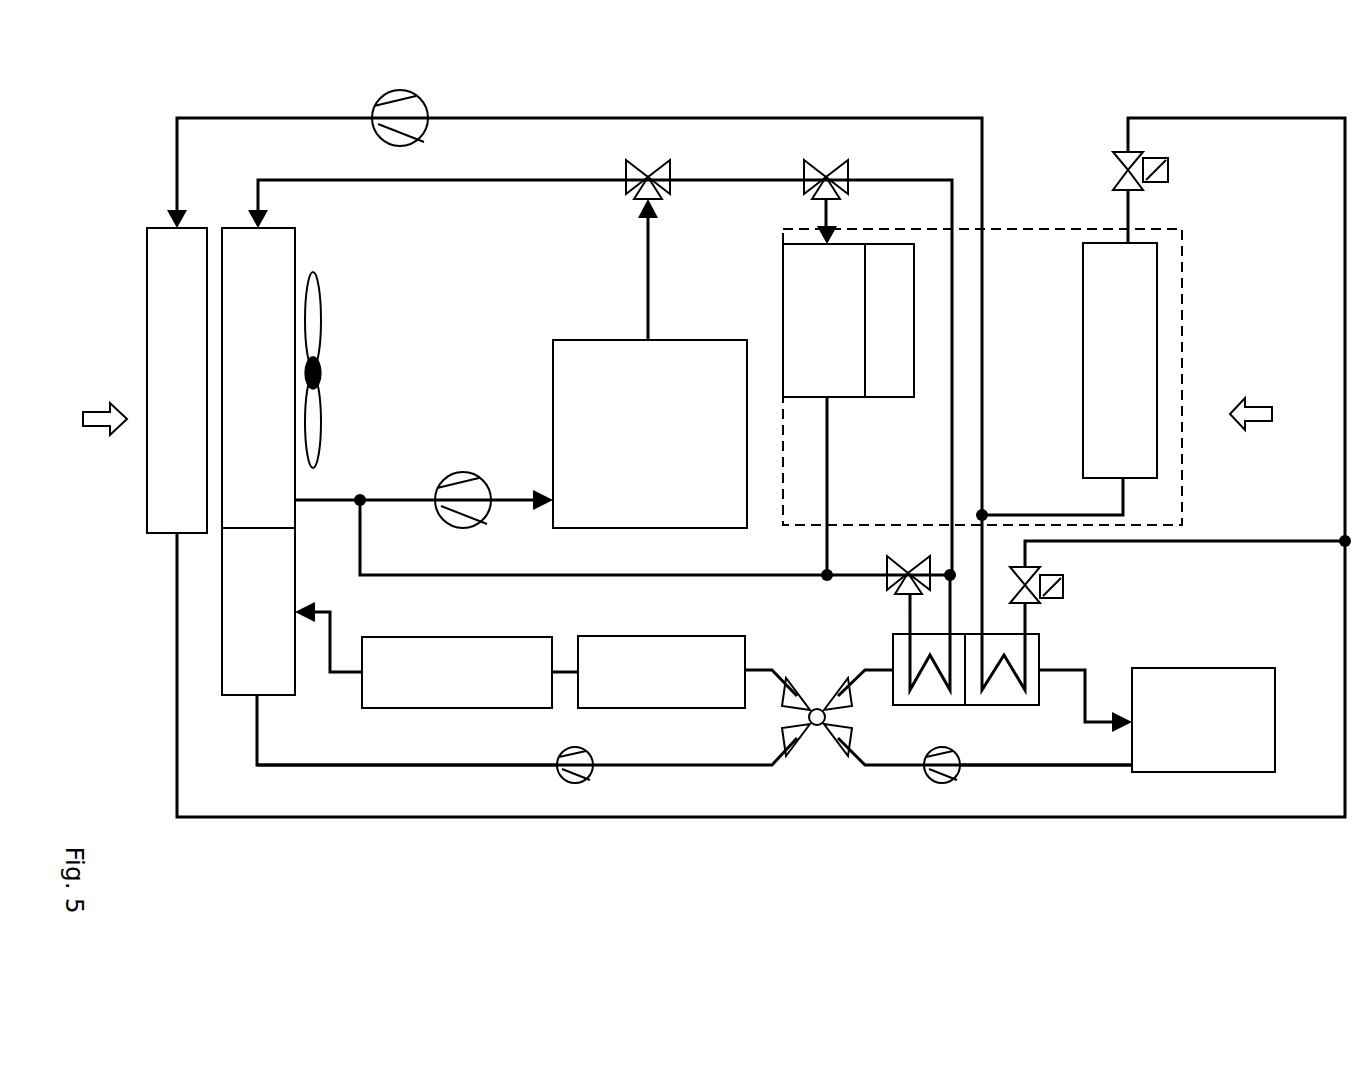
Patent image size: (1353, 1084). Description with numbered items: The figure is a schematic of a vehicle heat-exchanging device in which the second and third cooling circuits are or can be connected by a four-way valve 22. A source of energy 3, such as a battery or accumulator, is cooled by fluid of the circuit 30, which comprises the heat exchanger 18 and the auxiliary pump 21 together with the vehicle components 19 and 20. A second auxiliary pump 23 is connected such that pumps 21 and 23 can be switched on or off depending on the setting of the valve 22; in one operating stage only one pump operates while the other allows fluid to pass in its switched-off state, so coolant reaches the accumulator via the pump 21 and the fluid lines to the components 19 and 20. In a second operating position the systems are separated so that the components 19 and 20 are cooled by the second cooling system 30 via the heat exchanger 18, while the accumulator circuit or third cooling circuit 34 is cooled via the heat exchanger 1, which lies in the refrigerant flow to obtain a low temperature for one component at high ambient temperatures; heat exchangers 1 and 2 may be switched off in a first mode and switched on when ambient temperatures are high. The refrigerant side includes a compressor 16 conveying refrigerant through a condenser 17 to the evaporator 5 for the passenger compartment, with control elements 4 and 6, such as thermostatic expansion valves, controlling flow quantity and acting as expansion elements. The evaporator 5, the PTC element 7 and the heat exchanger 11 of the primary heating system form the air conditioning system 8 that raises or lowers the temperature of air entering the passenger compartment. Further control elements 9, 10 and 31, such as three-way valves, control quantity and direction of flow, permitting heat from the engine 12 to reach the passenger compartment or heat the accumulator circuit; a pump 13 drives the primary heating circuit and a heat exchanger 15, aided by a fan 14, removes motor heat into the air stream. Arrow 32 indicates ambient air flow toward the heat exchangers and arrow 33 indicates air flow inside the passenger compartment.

The heat exchanger 1 is at (1005, 640).
The heat exchanger 2 is at (932, 640).
The source of energy 3 is at (1143, 688).
The control element 4 is at (1035, 578).
The evaporator 5 is at (1143, 294).
The control element 6 is at (1150, 180).
The PTC element 7 is at (897, 262).
The air conditioning system 8 is at (1011, 253).
The control element 9 is at (805, 190).
The three-way valve 10 is at (628, 190).
The heat exchanger 11 is at (822, 268).
The engine 12 is at (578, 370).
The pump 13 is at (470, 510).
The fan 14 is at (320, 378).
The heat exchanger 15 is at (282, 252).
The compressor 16 is at (427, 130).
The condenser 17 is at (167, 290).
The heat exchanger 18 is at (237, 613).
The vehicle component 19 is at (445, 643).
The vehicle component 20 is at (590, 643).
The pump 21 is at (585, 770).
The four-way valve 22 is at (815, 735).
The auxiliary pump 23 is at (955, 762).
The circuit 30 is at (518, 770).
The control element 31 is at (898, 578).
The arrow 32 is at (103, 437).
The arrow 33 is at (1251, 427).
The third cooling circuit 34 is at (1058, 768).